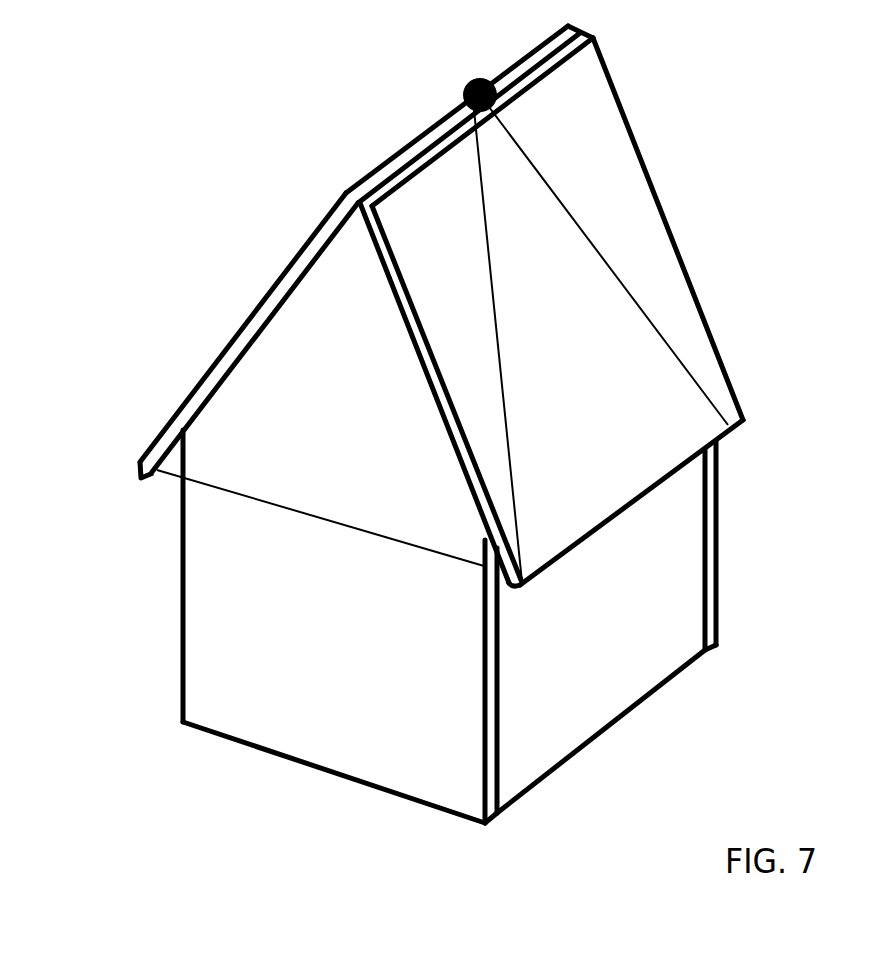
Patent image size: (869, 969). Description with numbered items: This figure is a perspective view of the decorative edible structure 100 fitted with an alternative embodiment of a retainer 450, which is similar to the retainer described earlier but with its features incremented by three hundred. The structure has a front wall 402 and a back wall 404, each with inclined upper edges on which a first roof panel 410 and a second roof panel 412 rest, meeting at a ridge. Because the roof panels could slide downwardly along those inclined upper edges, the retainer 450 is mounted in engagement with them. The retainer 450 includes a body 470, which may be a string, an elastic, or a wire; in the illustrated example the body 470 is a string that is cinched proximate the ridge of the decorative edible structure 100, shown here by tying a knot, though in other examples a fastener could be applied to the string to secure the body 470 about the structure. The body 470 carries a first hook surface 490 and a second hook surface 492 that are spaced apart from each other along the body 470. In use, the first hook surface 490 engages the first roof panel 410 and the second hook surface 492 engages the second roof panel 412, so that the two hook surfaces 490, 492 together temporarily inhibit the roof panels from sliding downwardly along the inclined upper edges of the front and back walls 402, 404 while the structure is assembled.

The decorative edible structure 100 is at (687, 73).
The front wall 402 is at (198, 638).
The back wall 404 is at (717, 512).
The first roof panel 410 is at (657, 276).
The second roof panel 412 is at (238, 330).
The retainer 450 is at (553, 178).
The body 470 is at (593, 240).
The first hook surface 490 is at (519, 592).
The second hook surface 492 is at (165, 468).